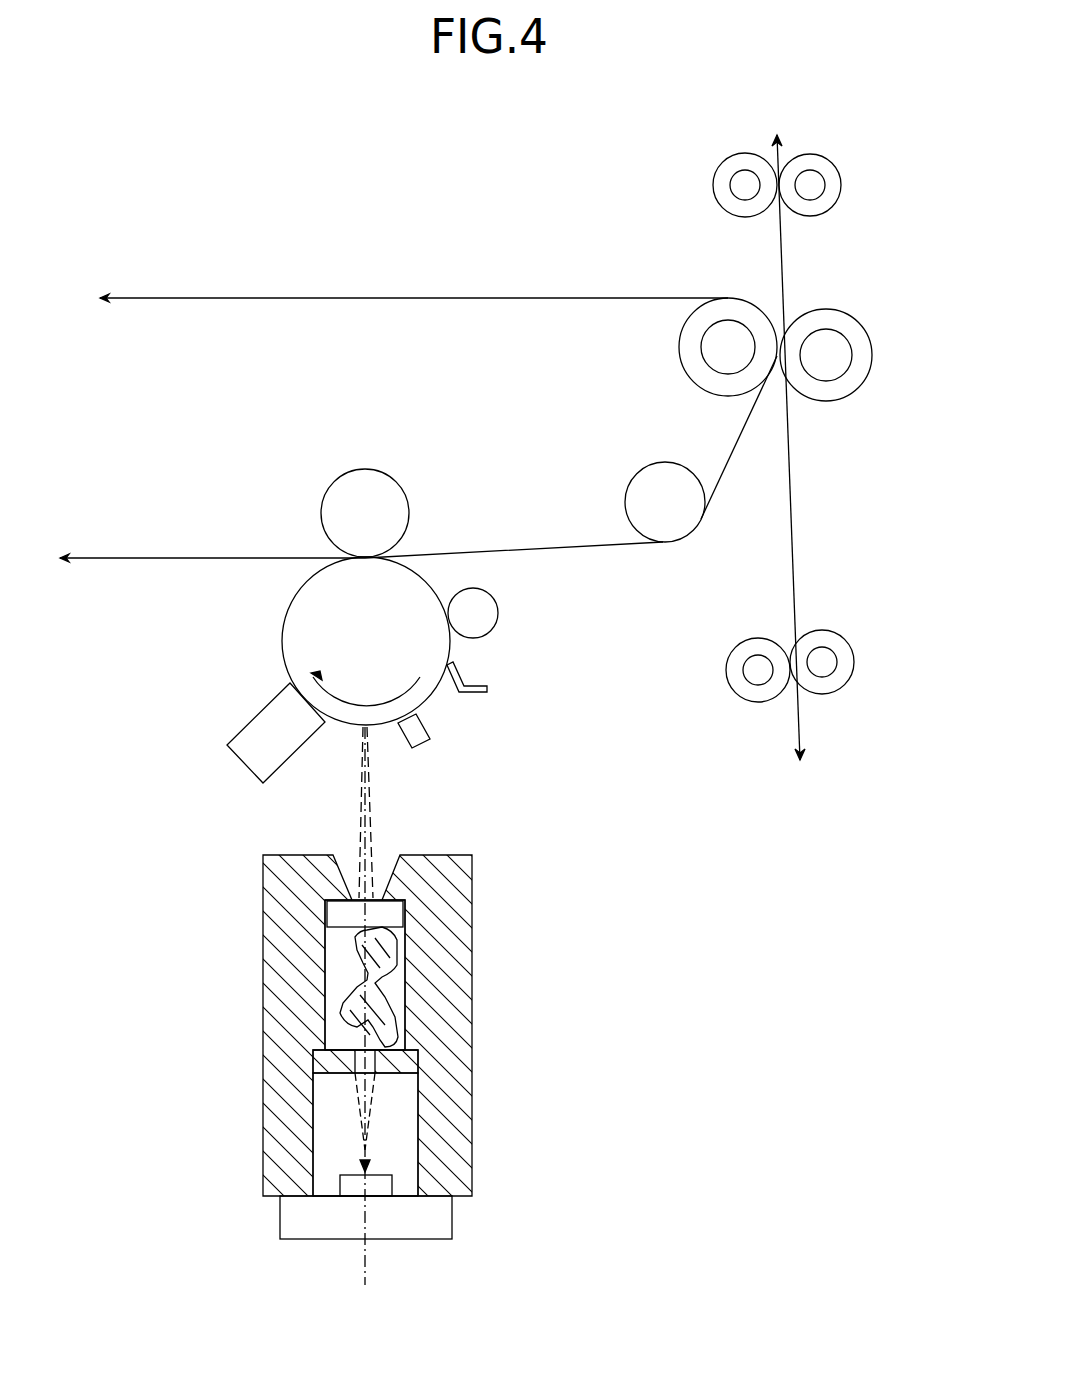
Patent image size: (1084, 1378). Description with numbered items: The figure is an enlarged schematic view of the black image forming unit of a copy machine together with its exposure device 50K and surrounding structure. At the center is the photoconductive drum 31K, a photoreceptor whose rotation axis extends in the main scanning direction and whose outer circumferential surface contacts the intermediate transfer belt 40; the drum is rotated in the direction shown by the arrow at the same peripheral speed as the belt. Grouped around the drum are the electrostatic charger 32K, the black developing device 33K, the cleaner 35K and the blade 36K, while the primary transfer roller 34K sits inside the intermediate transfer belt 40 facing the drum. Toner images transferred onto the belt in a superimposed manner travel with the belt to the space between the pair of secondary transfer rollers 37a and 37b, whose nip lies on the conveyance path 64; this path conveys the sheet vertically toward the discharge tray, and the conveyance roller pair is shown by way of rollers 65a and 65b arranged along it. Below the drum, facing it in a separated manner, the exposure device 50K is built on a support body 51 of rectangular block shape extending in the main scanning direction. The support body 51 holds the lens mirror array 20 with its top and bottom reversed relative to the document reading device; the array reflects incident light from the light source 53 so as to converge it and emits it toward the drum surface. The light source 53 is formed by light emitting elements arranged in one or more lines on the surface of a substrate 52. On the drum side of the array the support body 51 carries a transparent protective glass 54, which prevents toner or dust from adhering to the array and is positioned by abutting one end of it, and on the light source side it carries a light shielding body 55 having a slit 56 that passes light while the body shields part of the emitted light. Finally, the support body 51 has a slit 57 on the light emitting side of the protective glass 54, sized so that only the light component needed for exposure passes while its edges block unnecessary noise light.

The lens mirror array 20 is at (388, 988).
The photoconductive drum 31K is at (282, 636).
The electrostatic charger 32K is at (418, 736).
The black developing device 33K is at (250, 755).
The primary transfer roller 34K is at (362, 478).
The cleaner 35K is at (490, 615).
The blade 36K is at (488, 688).
The secondary transfer roller 37a is at (680, 349).
The secondary transfer roller 37b is at (872, 360).
The intermediate transfer belt 40 is at (184, 299).
The exposure device 50K is at (471, 1047).
The support body 51 is at (453, 1105).
The substrate 52 is at (453, 1220).
The light source 53 is at (345, 1188).
The protective glass 54 is at (404, 912).
The light shielding body 55 is at (418, 1062).
The slit 56 is at (352, 1080).
The slit 57 is at (357, 912).
The conveyance path 64 is at (784, 565).
The roller 65a is at (712, 185).
The roller 65b is at (842, 186).